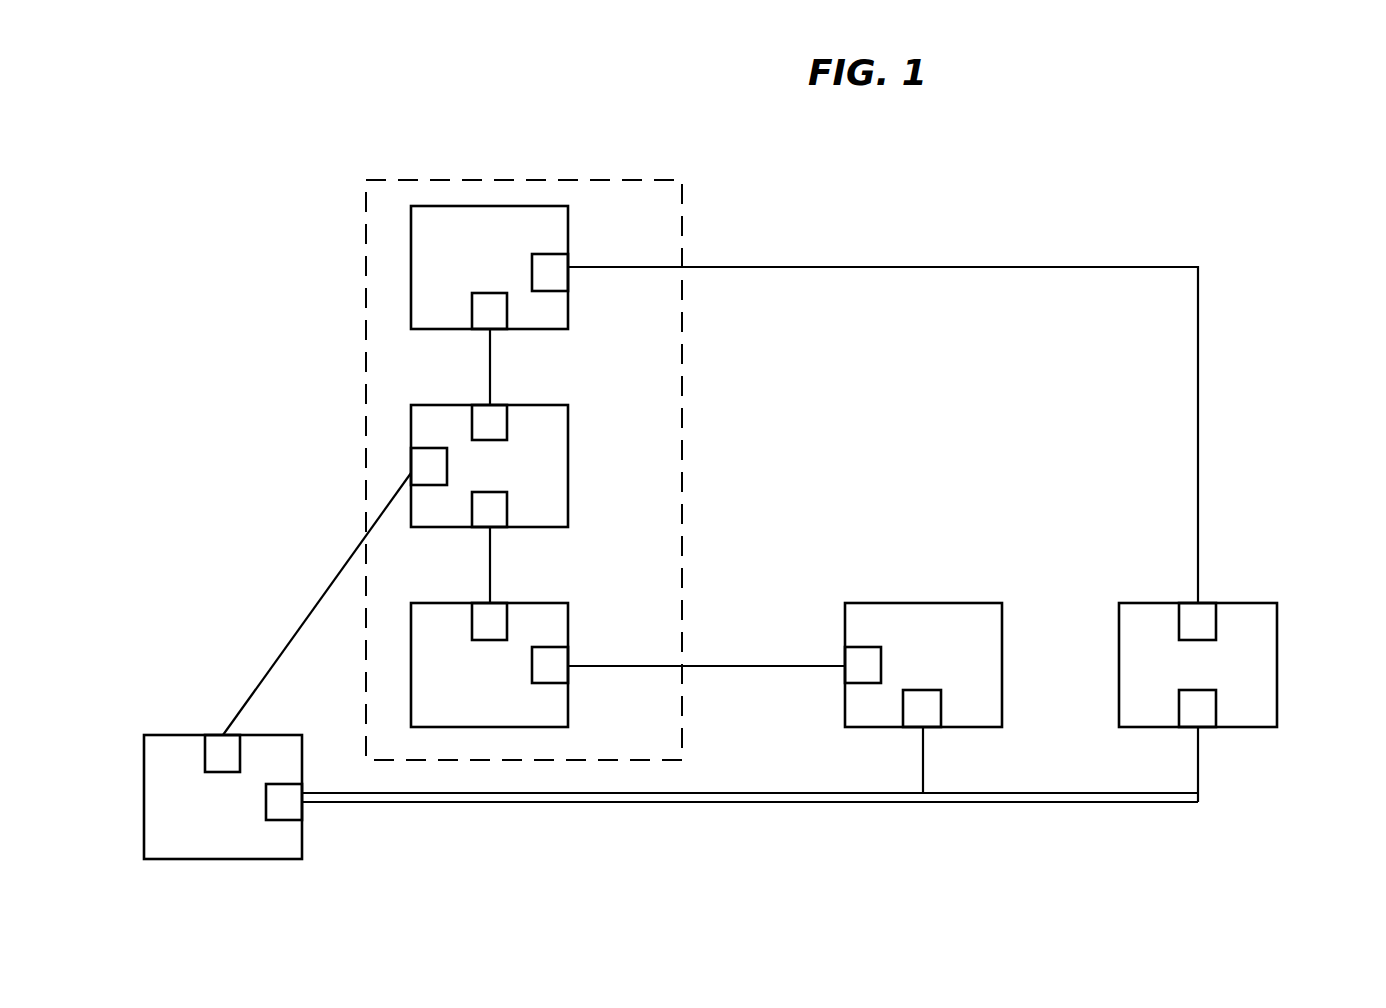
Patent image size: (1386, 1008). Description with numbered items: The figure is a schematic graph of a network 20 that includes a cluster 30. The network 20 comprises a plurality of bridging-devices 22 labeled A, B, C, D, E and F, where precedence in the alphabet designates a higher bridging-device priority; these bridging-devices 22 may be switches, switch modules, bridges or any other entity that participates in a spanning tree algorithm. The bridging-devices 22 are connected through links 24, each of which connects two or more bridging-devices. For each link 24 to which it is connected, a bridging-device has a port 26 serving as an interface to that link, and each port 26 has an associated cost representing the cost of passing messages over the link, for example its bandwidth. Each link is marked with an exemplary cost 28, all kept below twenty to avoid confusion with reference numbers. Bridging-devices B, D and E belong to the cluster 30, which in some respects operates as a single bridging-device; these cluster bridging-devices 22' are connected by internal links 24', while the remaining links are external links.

The network 20 is at (1163, 212).
The bridging-device 22 is at (754, 705).
The cluster bridging-device 22' is at (542, 464).
The link 24 is at (710, 510).
The internal link 24' is at (444, 466).
The port 26 is at (507, 512).
The cost 28 is at (515, 367).
The cluster 30 is at (643, 178).